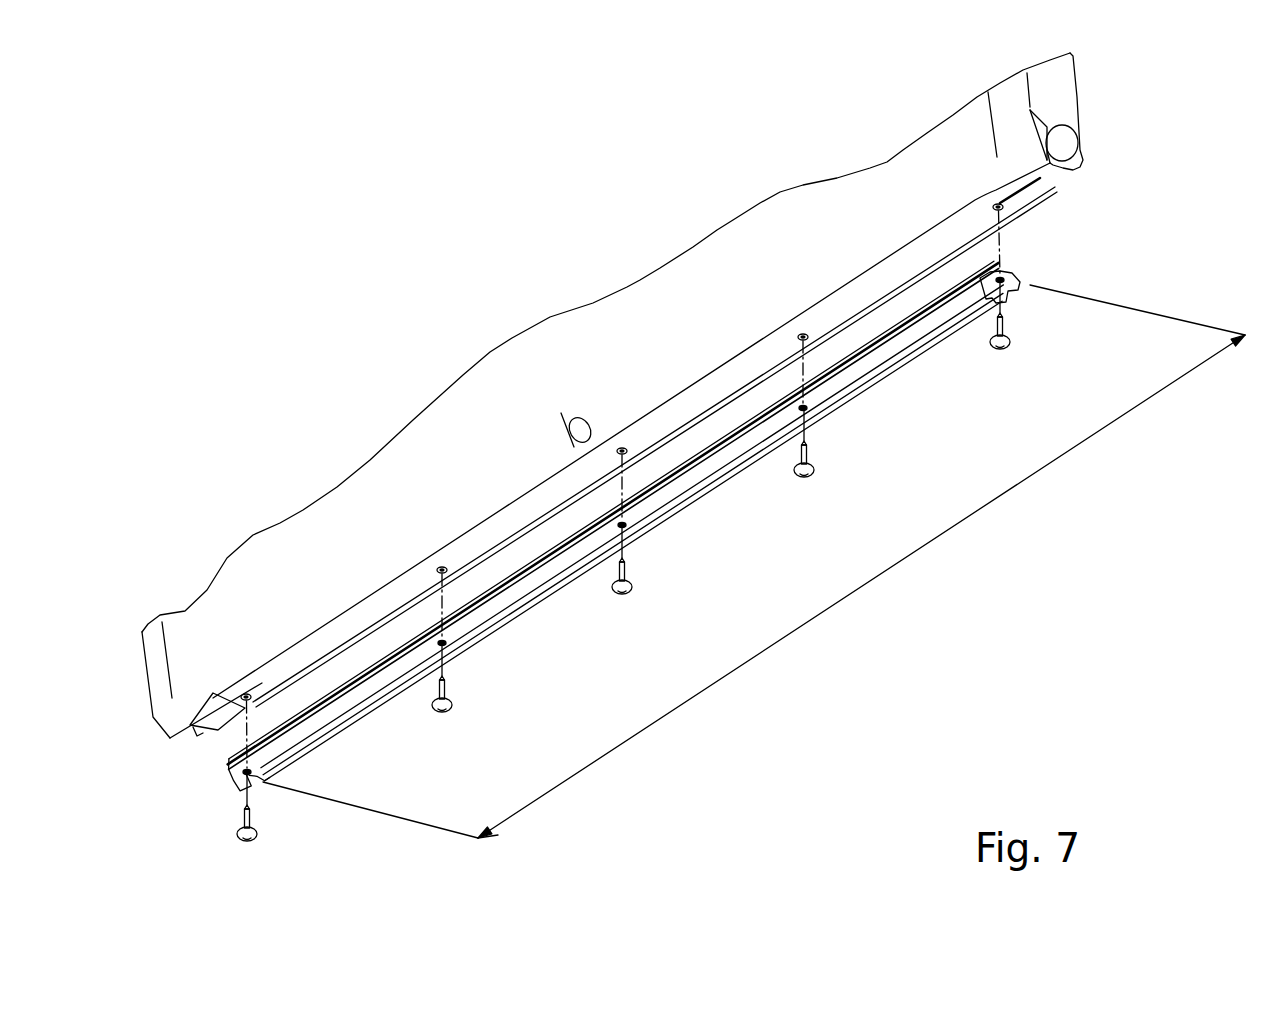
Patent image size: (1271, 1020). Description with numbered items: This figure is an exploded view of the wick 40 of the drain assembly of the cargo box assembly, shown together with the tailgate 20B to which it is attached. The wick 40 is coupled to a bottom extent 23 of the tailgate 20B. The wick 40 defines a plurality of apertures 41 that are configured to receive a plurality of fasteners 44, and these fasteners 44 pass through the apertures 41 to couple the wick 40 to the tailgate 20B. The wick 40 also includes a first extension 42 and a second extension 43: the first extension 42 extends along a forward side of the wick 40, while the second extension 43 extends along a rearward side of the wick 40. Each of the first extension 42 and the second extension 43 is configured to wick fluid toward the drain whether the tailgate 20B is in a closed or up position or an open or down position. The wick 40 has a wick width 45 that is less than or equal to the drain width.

The tailgate 20B is at (441, 430).
The bottom extent 23 is at (962, 241).
The wick 40 is at (564, 525).
The apertures 41 is at (447, 645).
The first extension 42 is at (722, 498).
The second extension 43 is at (862, 352).
The fasteners 44 is at (1010, 325).
The wick width 45 is at (860, 587).